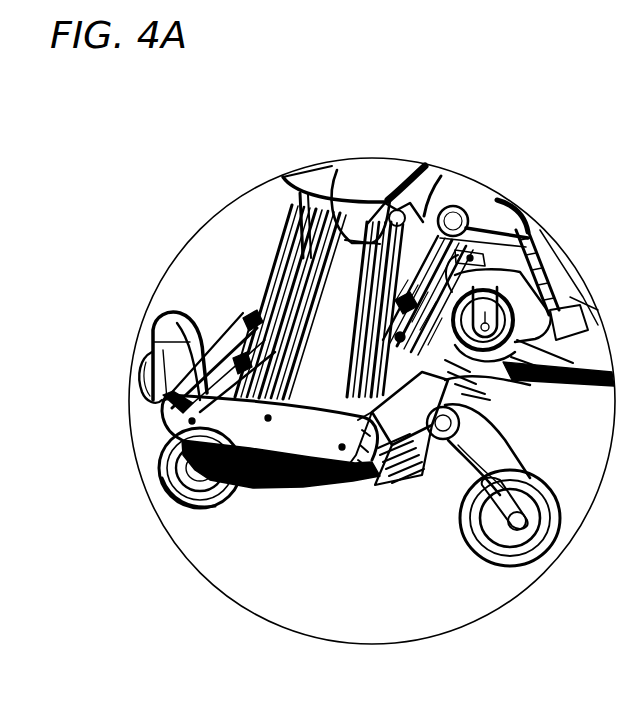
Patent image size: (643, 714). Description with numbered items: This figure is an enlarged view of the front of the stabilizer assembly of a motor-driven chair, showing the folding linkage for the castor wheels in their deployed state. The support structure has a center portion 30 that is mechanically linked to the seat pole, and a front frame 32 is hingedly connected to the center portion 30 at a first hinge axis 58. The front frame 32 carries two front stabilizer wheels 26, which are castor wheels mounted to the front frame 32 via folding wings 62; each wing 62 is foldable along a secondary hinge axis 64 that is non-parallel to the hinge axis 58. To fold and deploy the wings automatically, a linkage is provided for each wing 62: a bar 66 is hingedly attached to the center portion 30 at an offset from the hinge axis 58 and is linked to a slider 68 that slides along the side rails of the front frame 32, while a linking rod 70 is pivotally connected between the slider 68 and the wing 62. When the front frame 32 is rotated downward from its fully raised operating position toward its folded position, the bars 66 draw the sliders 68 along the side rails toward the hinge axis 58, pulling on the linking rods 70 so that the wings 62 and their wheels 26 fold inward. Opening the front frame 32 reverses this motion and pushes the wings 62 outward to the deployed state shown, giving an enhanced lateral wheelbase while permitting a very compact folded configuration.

The center portion 30 is at (388, 170).
The first hinge axis 58 is at (455, 224).
The bar 66 is at (294, 228).
The slider 68 is at (246, 318).
The linking rod 70 is at (192, 338).
The folding wing 62 is at (178, 360).
The secondary hinge axis 64 is at (186, 422).
The front stabilizer wheel 26 is at (192, 504).
The front frame 32 is at (290, 482).